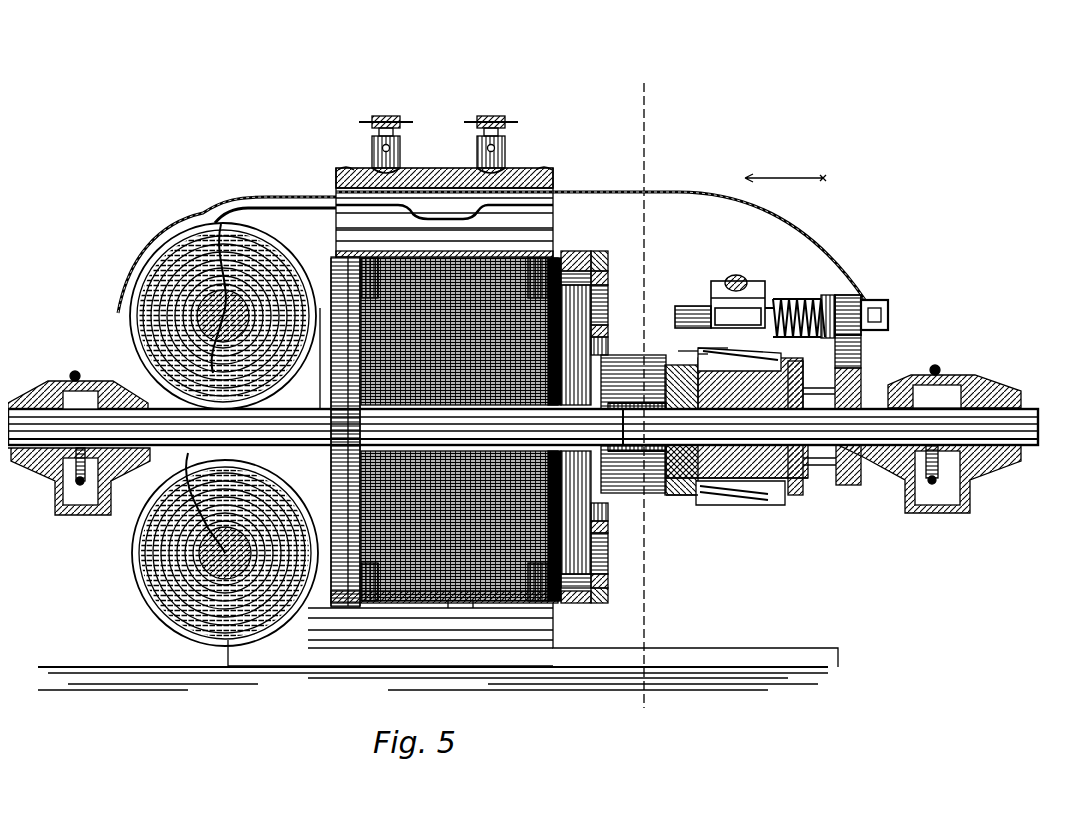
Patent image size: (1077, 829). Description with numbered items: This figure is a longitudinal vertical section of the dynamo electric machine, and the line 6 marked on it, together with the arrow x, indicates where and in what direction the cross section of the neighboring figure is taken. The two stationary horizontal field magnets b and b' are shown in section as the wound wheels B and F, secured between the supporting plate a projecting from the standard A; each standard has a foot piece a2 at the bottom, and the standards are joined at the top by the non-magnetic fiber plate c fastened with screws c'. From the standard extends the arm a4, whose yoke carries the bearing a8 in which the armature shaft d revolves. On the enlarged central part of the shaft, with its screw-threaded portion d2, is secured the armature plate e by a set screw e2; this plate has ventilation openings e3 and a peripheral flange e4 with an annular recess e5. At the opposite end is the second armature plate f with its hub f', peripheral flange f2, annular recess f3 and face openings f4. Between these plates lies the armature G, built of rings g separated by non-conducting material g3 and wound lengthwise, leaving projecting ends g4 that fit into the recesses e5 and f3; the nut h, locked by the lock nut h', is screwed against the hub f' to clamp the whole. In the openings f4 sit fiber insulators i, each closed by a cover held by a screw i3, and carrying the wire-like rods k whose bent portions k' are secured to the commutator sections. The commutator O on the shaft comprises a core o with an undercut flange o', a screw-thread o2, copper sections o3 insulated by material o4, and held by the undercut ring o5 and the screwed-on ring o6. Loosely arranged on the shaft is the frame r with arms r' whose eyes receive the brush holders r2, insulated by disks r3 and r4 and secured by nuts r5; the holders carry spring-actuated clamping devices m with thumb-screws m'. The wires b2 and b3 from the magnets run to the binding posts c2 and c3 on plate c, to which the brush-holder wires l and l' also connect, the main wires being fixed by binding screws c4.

The section line 6 is at (656, 403).
The supporting plate a is at (325, 222).
The foot piece a2 is at (575, 650).
The arm a4 is at (812, 455).
The bearing a8 is at (1015, 448).
The standard A is at (444, 387).
The field magnet b is at (159, 298).
The field magnet b' is at (162, 513).
The wire b2 is at (276, 198).
The wire b3 is at (157, 235).
The coil wheel B is at (223, 316).
The coil wheel F is at (225, 553).
The non-magnetic plate c is at (444, 163).
The screw c' is at (446, 159).
The binding post c2 is at (386, 153).
The binding post c3 is at (496, 153).
The binding screw c4 is at (497, 140).
The armature shaft d is at (534, 426).
The screw-threaded portion d2 is at (644, 427).
The armature plate e is at (345, 432).
The set screw e2 is at (311, 358).
The ventilation opening e3 is at (345, 432).
The peripheral flange e4 is at (350, 598).
The annular recess e5 is at (378, 612).
The armature G is at (461, 429).
The armature ring g is at (440, 598).
The non-conducting material g3 is at (465, 598).
The projecting end g4 is at (512, 598).
The armature plate f is at (590, 427).
The hub f' is at (576, 429).
The peripheral flange f2 is at (585, 598).
The annular recess f3 is at (558, 598).
The opening f4 is at (600, 574).
The insulator i is at (600, 550).
The screw i3 is at (600, 535).
The rod k is at (619, 438).
The bent portion k' is at (633, 412).
The nut h is at (637, 469).
The lock nut h' is at (644, 470).
The wire l is at (600, 236).
The wire l' is at (479, 215).
The arrow x is at (782, 165).
The clamping device m is at (748, 290).
The thumb-screw m' is at (742, 268).
The core o is at (737, 419).
The commutator O is at (737, 509).
The undercut flange o' is at (819, 367).
The screw-thread o2 is at (681, 430).
The commutator section o3 is at (740, 427).
The non-conducting material o4 is at (715, 497).
The undercut ring o5 is at (690, 510).
The ring o6 is at (668, 512).
The frame r is at (823, 341).
The arm r' is at (862, 351).
The brush holder r2 is at (683, 300).
The insulating disk r3 is at (856, 290).
The insulating disk r4 is at (822, 280).
The nut r5 is at (876, 306).